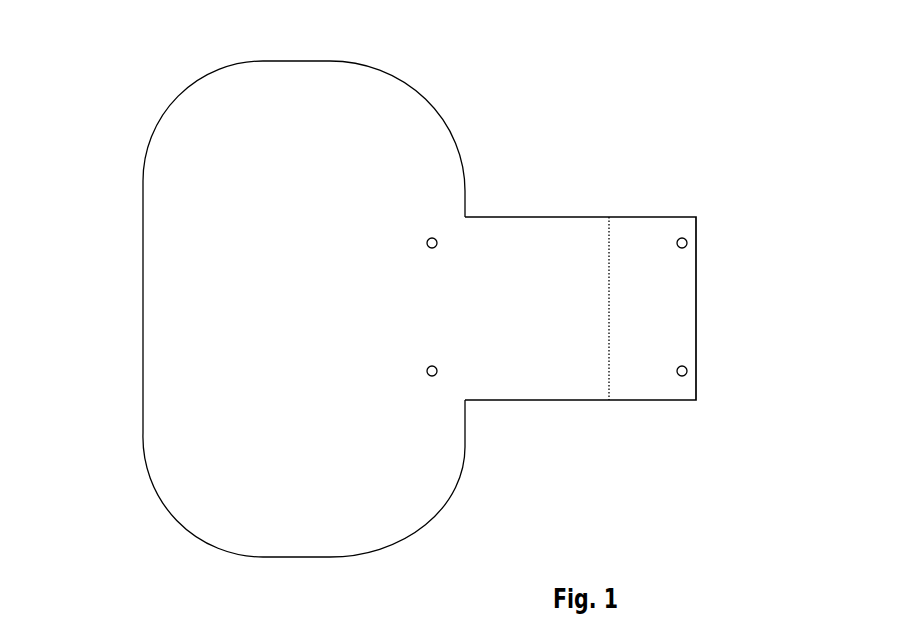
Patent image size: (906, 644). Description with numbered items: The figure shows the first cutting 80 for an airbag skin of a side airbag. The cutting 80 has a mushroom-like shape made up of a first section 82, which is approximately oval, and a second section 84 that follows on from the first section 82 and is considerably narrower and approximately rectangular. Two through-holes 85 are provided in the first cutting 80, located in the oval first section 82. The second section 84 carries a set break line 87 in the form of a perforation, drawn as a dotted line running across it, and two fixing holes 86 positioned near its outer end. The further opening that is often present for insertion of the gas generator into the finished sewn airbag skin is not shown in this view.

The first cutting 80 is at (480, 96).
The first section 82 is at (240, 147).
The second section 84 is at (542, 383).
The through-holes 85 is at (427, 371).
The fixing holes 86 is at (686, 246).
The set break line 87 is at (609, 270).